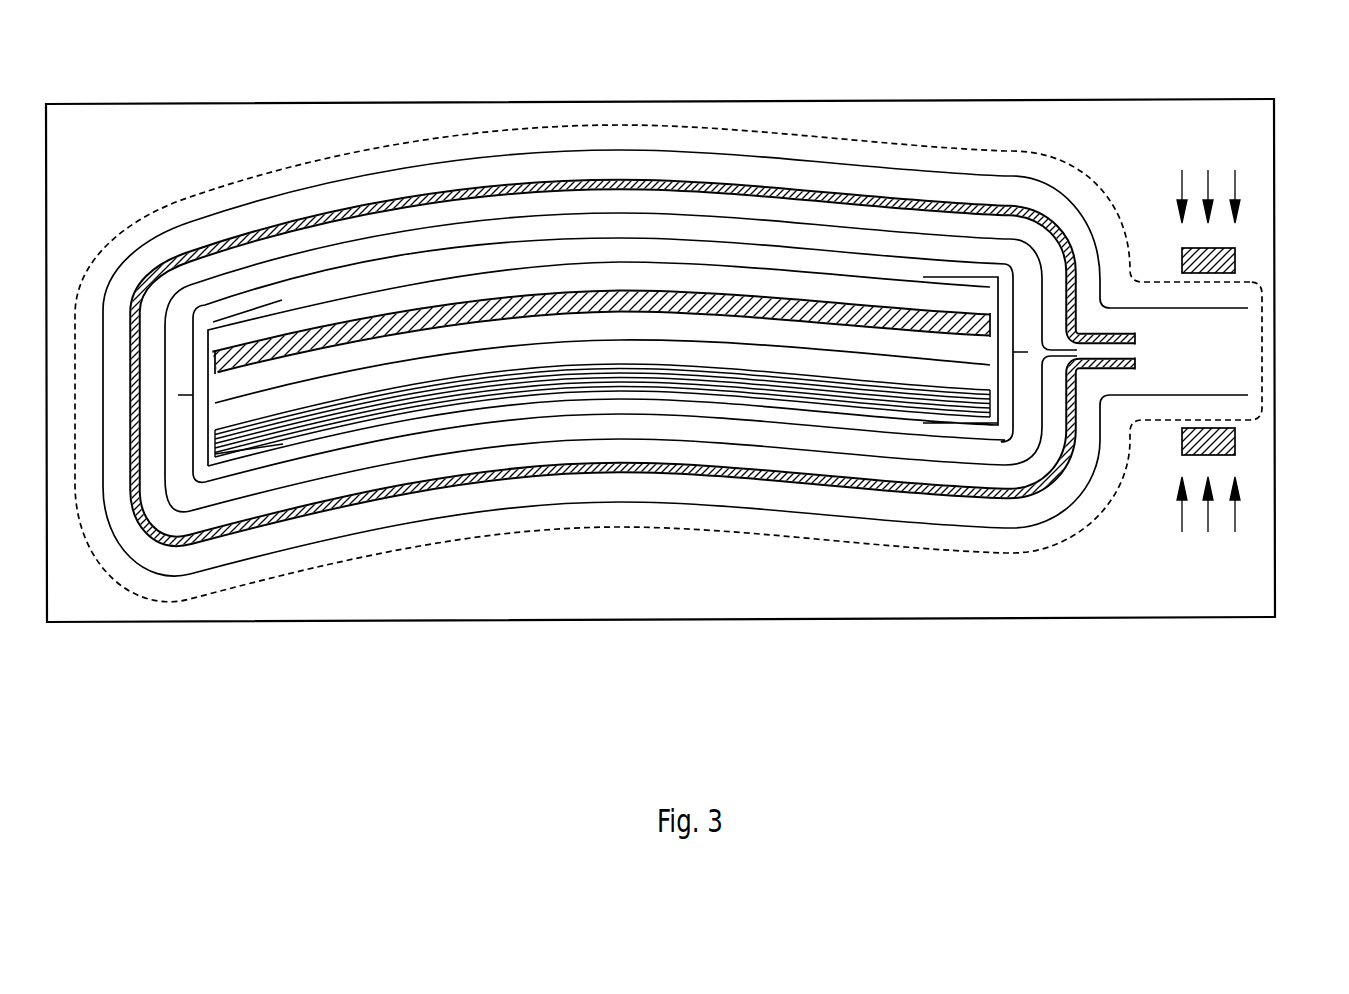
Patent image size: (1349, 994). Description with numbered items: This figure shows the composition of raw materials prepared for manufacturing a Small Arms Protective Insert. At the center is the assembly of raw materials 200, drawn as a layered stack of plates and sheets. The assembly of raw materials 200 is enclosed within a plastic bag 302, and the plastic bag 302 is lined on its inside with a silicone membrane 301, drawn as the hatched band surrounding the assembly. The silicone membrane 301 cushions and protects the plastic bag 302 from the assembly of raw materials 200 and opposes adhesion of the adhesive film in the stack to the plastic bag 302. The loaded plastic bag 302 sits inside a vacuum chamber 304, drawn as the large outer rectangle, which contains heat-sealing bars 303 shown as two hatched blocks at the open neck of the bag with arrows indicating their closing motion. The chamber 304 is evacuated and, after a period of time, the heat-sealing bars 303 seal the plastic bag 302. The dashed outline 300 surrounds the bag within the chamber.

The assembly of raw materials 200 is at (443, 223).
The thermal insulation boundary 300 is at (357, 563).
The silicone membrane 301 is at (862, 197).
The plastic bag 302 is at (948, 535).
The heat-sealing bars 303 is at (1236, 262).
The vacuum chamber 304 is at (645, 620).